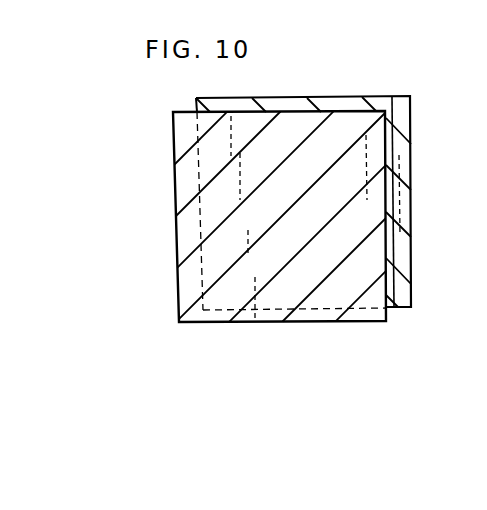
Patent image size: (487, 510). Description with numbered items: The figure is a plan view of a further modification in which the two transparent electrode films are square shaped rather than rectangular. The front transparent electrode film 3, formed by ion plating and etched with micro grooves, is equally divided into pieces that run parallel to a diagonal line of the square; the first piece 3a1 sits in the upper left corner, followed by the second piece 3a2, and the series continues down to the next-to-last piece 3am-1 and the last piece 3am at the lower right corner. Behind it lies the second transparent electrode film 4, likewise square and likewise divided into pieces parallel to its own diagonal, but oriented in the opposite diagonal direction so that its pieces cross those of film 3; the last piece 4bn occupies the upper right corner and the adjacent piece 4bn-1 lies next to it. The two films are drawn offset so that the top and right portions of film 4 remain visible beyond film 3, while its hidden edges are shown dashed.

The transparent electrode film 3 is at (248, 231).
The transparent electrode piece 3a1 is at (176, 142).
The transparent electrode piece 3a2 is at (177, 194).
The transparent electrode piece 3am-1 is at (307, 318).
The transparent electrode piece 3am is at (367, 316).
The transparent electrode film 4 is at (335, 203).
The transparent electrode piece 4bn is at (410, 118).
The transparent electrode piece 4bn-1 is at (412, 221).